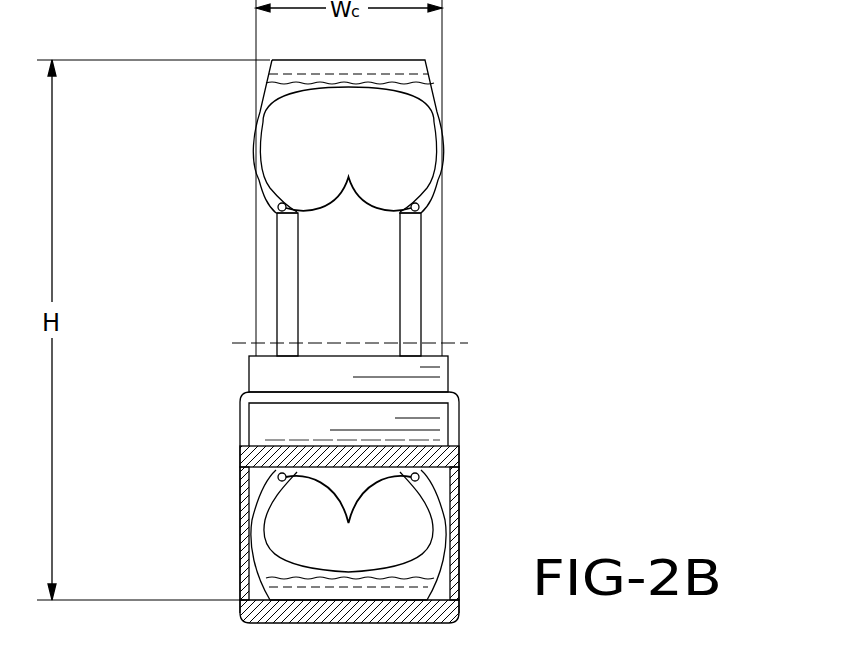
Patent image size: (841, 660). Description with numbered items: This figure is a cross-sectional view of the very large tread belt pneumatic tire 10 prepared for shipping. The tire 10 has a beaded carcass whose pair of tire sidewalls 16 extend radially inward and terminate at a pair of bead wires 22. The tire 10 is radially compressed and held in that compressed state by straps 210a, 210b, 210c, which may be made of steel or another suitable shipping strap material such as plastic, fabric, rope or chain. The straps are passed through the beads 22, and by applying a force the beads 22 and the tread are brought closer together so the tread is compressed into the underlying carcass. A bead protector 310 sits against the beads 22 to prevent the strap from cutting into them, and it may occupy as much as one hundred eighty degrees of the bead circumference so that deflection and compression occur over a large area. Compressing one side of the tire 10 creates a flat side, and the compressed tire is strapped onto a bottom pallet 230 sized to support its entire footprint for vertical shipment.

The tread belt pneumatic tire 10 is at (435, 96).
The tire sidewalls 16 is at (258, 143).
The bead wires 22 is at (348, 351).
The strap 210a is at (244, 427).
The strap 210b is at (348, 401).
The strap 210c is at (244, 497).
The bead protector 310 is at (436, 462).
The bottom pallet 230 is at (262, 613).